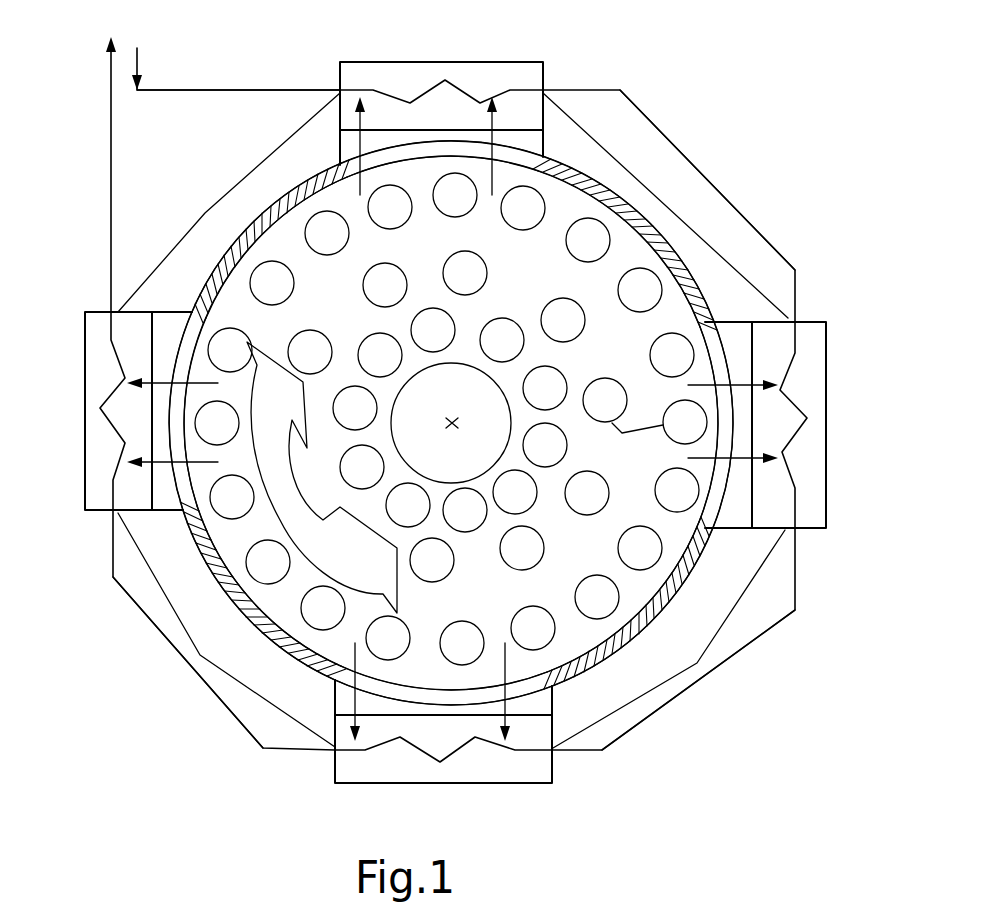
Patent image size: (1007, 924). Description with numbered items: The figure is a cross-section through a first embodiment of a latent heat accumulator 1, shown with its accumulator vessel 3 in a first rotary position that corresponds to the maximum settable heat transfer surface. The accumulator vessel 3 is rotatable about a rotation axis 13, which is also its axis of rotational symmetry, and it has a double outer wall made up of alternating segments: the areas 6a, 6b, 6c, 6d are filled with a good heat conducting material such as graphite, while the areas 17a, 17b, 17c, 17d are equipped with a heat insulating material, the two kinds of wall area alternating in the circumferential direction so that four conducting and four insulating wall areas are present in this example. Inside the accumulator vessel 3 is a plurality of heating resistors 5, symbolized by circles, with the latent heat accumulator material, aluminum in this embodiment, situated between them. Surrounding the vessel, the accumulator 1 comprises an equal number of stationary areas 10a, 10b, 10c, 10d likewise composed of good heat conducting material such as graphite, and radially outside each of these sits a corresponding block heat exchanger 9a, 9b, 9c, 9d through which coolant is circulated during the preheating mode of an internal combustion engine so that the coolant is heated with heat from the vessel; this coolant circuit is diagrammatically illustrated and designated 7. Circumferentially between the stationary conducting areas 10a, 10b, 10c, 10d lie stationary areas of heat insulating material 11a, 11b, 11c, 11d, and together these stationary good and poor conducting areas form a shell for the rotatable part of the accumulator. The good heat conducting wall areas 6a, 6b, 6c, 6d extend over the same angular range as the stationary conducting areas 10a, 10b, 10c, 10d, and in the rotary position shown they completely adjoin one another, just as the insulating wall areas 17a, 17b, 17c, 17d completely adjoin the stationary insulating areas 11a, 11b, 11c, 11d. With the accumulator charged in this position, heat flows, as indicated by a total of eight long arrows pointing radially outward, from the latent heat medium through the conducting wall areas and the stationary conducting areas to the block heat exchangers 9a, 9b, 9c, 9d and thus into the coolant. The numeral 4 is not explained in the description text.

The latent heat accumulator 1 is at (663, 110).
The accumulator vessel 3 is at (534, 276).
The cylindrical housing wall 4 is at (687, 260).
The heating resistors 5 is at (370, 267).
The good heat conducting area of accumulator vessel wall 6a is at (417, 152).
The good heat conducting area of accumulator vessel wall 6b is at (732, 430).
The good heat conducting area of accumulator vessel wall 6c is at (538, 682).
The good heat conducting area of accumulator vessel wall 6d is at (182, 513).
The coolant circuit 7 is at (253, 90).
The block heat exchanger 9a is at (543, 72).
The block heat exchanger 9b is at (826, 348).
The block heat exchanger 9c is at (537, 782).
The block heat exchanger 9d is at (98, 513).
The stationary good heat conducting area 10a is at (533, 147).
The stationary good heat conducting area 10b is at (737, 523).
The stationary good heat conducting area 10c is at (543, 700).
The stationary good heat conducting area 10d is at (165, 332).
The stationary heat insulating area 11a is at (690, 207).
The stationary heat insulating area 11b is at (730, 582).
The stationary heat insulating area 11c is at (307, 710).
The stationary heat insulating area 11d is at (217, 187).
The rotation axis 13 is at (457, 422).
The heat insulating area of accumulator vessel wall 17a is at (618, 207).
The heat insulating area of accumulator vessel wall 17b is at (665, 610).
The heat insulating area of accumulator vessel wall 17c is at (253, 610).
The heat insulating area of accumulator vessel wall 17d is at (210, 278).